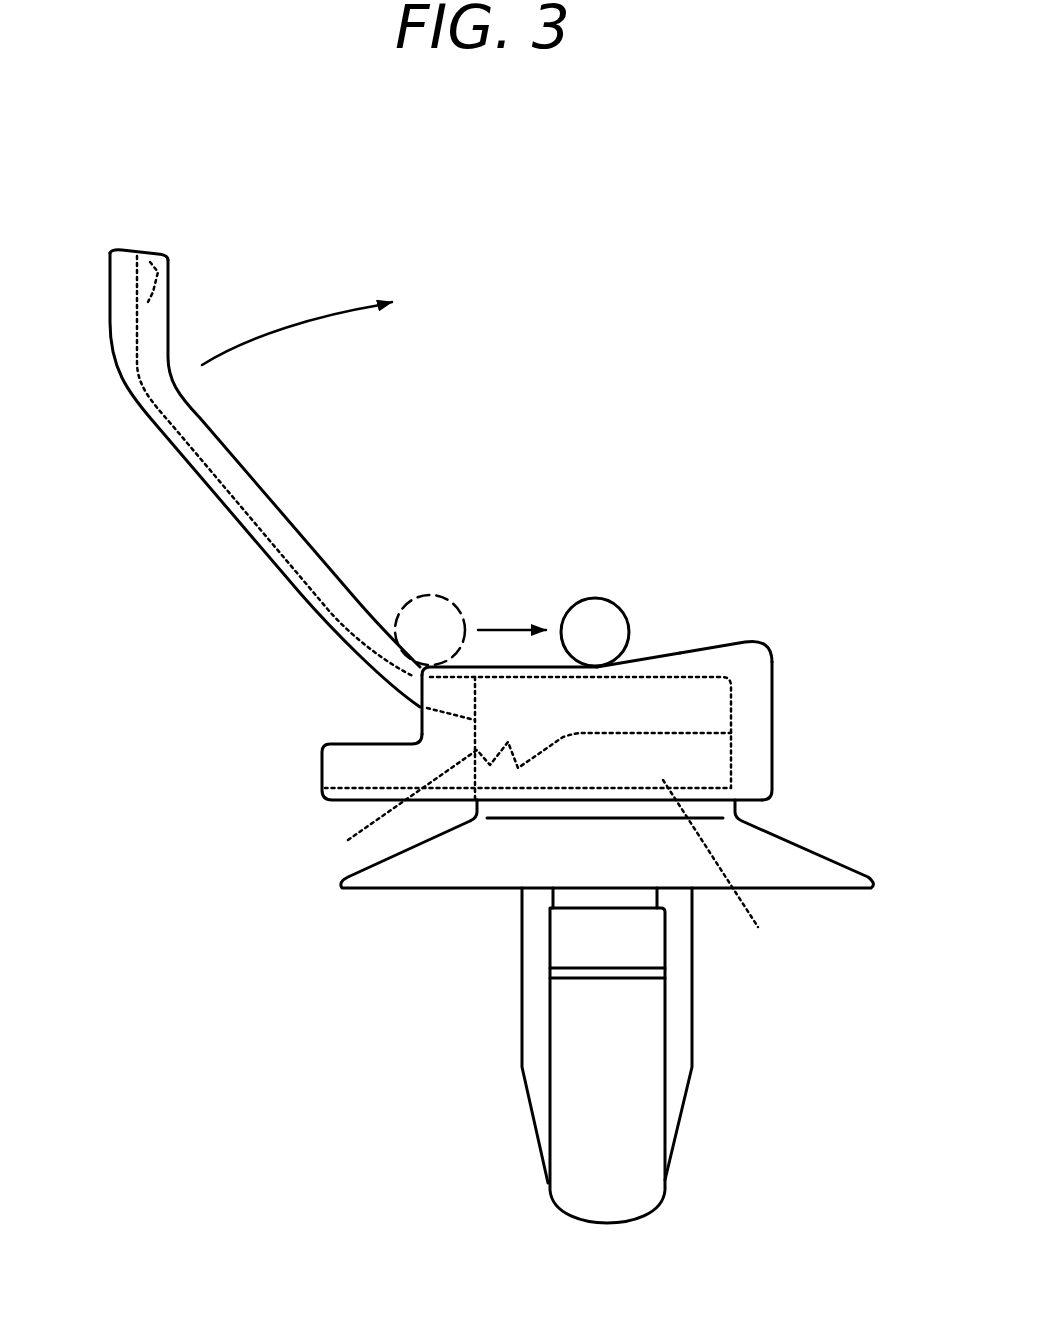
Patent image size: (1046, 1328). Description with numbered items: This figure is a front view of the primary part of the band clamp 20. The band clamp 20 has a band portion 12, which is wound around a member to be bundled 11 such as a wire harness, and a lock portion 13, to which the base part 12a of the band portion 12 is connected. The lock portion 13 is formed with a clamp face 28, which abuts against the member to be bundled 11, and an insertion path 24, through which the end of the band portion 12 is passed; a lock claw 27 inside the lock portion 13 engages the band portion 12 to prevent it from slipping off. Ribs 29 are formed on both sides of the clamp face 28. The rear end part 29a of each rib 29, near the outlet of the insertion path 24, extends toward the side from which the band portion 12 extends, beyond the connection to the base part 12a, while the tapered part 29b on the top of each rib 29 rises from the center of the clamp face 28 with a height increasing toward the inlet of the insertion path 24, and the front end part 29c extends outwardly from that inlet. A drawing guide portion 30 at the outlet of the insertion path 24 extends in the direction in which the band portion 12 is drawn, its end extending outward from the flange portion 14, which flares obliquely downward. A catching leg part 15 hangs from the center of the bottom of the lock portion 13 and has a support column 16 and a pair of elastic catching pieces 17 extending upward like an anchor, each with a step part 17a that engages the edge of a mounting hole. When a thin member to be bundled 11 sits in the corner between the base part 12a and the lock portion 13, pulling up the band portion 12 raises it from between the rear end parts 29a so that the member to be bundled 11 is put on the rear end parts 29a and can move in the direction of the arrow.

The band clamp 20 is at (645, 350).
The band portion 12 is at (188, 462).
The base part 12a is at (390, 688).
The member to be bundled 11 is at (588, 612).
The lock portion 13 is at (703, 560).
The ribs 29 is at (774, 643).
The rear end part 29a is at (420, 727).
The tapered part 29b is at (703, 640).
The front end part 29c is at (773, 717).
The clamp face 28 is at (651, 657).
The drawing guide portion 30 is at (320, 770).
The lock claw 27 is at (519, 799).
The insertion path 24 is at (718, 877).
The flange portion 14 is at (830, 858).
The catching leg part 15 is at (497, 1117).
The support column 16 is at (680, 1013).
The elastic catching pieces 17 is at (570, 1030).
The step part 17a is at (572, 908).